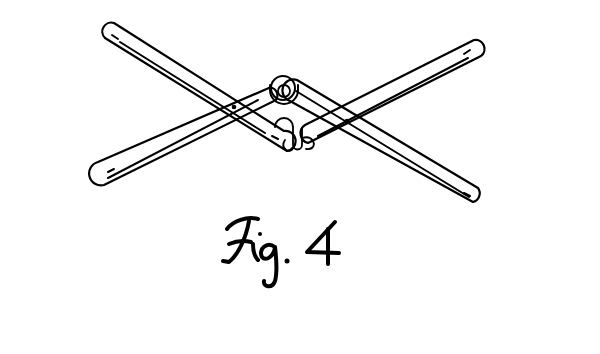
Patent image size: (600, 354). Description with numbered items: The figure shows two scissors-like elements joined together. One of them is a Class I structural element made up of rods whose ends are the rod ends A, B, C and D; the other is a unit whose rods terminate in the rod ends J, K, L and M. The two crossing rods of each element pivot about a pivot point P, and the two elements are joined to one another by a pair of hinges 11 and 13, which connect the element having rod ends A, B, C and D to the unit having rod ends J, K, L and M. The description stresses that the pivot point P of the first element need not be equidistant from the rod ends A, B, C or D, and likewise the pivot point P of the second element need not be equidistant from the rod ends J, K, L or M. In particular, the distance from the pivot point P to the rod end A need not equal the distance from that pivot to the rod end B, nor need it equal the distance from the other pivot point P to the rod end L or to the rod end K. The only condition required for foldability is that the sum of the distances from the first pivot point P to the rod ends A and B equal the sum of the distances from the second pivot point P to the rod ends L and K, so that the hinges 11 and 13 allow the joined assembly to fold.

The rod end D is at (105, 32).
The rod end M is at (483, 46).
The rod end C is at (94, 178).
The rod end L is at (483, 197).
The pivot point P is at (234, 106).
The rod end A is at (271, 77).
The hinge 11 is at (282, 76).
The rod end J is at (296, 88).
The rod end B is at (298, 153).
The hinge 13 is at (270, 127).
The rod end K is at (305, 149).